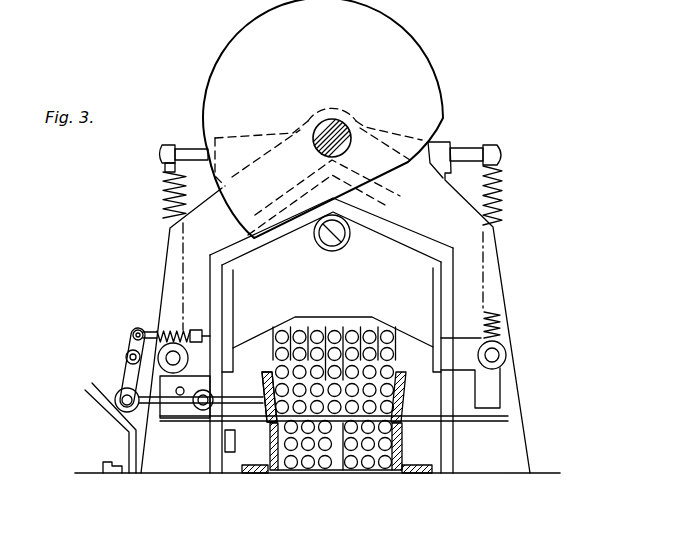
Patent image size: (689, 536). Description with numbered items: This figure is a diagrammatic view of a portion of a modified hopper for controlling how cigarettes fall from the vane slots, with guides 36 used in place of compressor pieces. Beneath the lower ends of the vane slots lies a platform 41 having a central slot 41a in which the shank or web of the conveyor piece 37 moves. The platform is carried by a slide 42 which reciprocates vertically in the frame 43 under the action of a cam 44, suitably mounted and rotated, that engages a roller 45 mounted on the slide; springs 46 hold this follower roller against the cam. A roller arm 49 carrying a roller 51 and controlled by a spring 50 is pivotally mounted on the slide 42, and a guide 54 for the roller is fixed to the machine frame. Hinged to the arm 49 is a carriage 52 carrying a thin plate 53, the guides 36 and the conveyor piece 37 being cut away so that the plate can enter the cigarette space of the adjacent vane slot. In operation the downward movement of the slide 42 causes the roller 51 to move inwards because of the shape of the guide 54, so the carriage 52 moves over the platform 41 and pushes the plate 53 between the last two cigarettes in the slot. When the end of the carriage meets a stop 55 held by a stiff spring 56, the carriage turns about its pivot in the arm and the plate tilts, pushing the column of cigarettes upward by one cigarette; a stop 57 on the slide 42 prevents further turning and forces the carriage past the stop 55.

The guides 36 is at (403, 382).
The conveyor piece 37 is at (333, 471).
The platform 41 is at (256, 423).
The central slot 41a is at (358, 470).
The slide 42 is at (430, 307).
The frame 43 is at (168, 275).
The cam 44 is at (445, 96).
The roller 45 is at (340, 249).
The springs 46 is at (162, 206).
The roller arm 49 is at (132, 352).
The spring 50 is at (185, 332).
The roller 51 is at (118, 390).
The carriage 52 is at (166, 422).
The thin plate 53 is at (263, 374).
The guide 54 is at (100, 412).
The stop 55 is at (230, 452).
The stiff spring 56 is at (236, 408).
The stop 57 is at (182, 396).